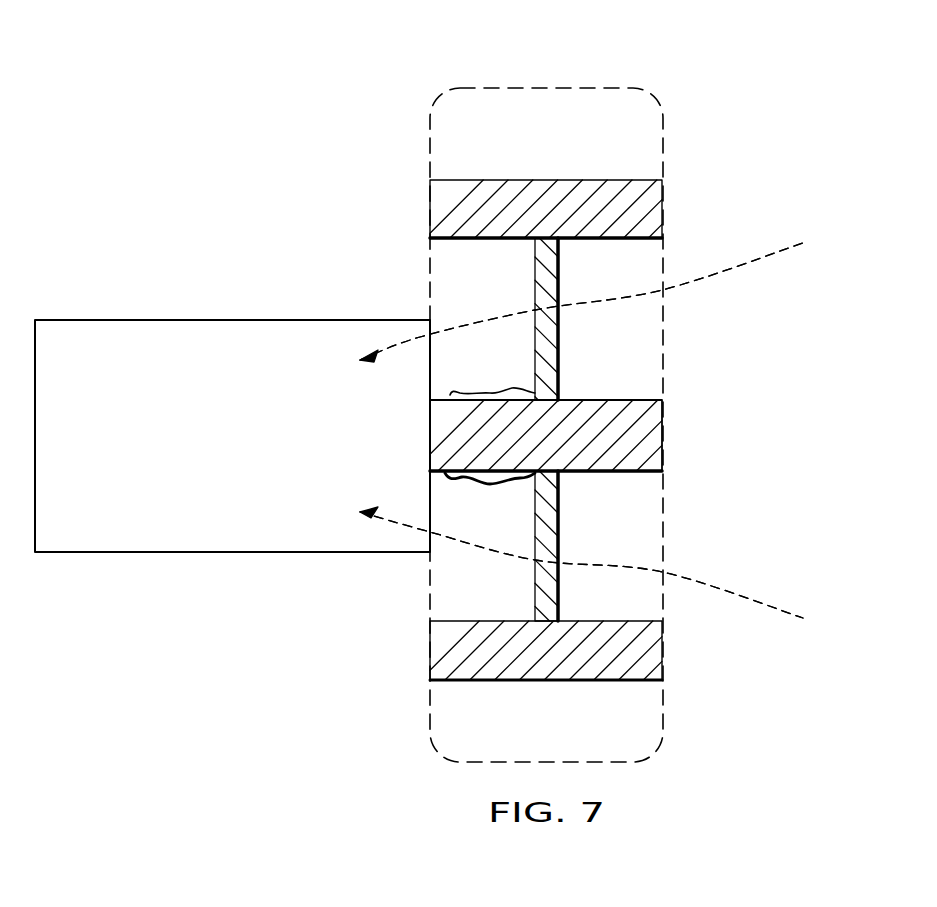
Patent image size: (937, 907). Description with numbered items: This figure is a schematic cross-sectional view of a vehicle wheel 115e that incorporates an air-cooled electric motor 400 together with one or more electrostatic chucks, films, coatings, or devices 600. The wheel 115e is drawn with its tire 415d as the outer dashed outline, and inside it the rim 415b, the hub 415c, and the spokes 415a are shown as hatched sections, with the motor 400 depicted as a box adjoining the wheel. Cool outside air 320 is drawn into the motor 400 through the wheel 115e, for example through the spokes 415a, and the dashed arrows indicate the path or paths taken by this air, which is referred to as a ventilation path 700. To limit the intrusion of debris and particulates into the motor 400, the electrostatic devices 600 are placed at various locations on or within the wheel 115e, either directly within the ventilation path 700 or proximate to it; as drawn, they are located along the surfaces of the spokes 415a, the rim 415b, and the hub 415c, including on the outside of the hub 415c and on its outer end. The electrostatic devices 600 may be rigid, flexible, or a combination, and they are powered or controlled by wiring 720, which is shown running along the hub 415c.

The air-cooled electric motor 400 is at (253, 453).
The tire 415d is at (543, 95).
The rim 415b is at (438, 214).
The hub 415c is at (440, 438).
The spokes 415a is at (545, 285).
The electrostatic chucks, films, coatings, or devices 600 is at (587, 240).
The wiring 720 is at (482, 392).
The cool outside air 320 is at (763, 263).
The ventilation path 700 is at (601, 430).
The vehicle wheel 115e is at (675, 773).